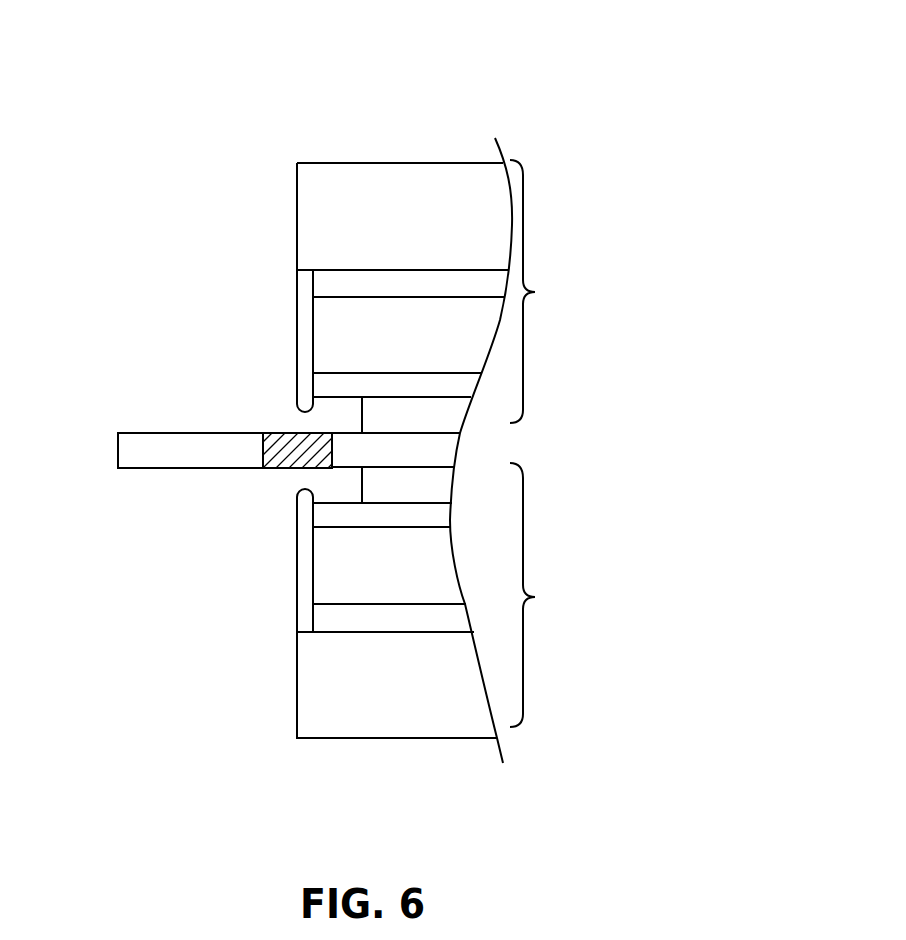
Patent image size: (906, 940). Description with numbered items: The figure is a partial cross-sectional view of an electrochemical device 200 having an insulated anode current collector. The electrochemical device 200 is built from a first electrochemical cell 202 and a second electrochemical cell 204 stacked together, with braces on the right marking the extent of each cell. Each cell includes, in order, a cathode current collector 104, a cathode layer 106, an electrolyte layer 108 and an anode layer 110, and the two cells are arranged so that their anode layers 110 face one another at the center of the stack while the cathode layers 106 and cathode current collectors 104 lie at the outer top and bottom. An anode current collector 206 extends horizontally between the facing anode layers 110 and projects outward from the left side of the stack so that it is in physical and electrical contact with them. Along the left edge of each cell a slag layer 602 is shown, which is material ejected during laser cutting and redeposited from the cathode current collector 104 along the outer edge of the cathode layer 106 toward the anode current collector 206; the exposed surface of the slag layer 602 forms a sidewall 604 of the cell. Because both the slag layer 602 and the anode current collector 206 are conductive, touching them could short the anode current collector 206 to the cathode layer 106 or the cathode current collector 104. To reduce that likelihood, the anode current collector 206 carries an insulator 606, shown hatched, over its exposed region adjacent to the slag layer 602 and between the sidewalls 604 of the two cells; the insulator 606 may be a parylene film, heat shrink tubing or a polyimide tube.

The electrochemical device 200 is at (193, 42).
The cathode current collector 104 is at (362, 188).
The cathode layer 106 is at (460, 340).
The electrolyte layer 108 is at (452, 518).
The anode layer 110 is at (443, 487).
The first electrochemical cell 202 is at (543, 291).
The second electrochemical cell 204 is at (543, 595).
The anode current collector 206 is at (160, 447).
The slag layer 602 is at (303, 370).
The sidewall 604 is at (297, 302).
The insulator 606 is at (280, 460).